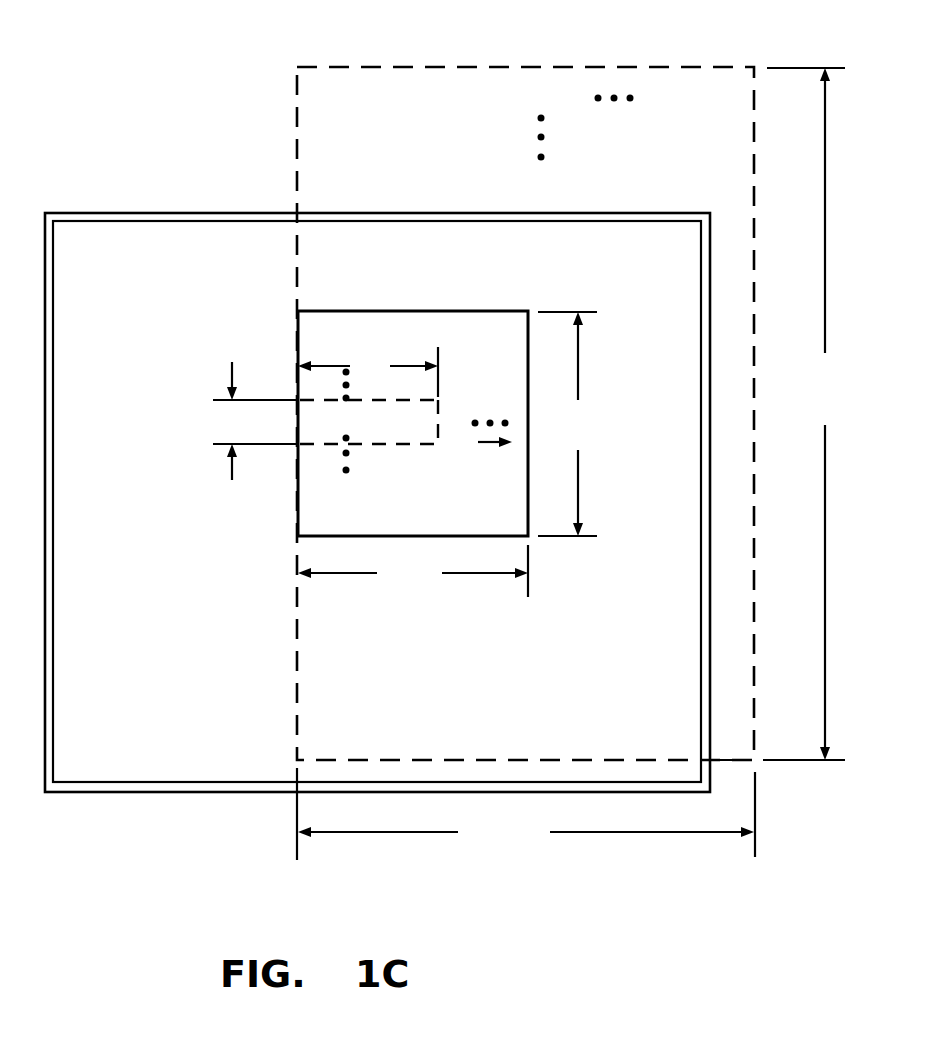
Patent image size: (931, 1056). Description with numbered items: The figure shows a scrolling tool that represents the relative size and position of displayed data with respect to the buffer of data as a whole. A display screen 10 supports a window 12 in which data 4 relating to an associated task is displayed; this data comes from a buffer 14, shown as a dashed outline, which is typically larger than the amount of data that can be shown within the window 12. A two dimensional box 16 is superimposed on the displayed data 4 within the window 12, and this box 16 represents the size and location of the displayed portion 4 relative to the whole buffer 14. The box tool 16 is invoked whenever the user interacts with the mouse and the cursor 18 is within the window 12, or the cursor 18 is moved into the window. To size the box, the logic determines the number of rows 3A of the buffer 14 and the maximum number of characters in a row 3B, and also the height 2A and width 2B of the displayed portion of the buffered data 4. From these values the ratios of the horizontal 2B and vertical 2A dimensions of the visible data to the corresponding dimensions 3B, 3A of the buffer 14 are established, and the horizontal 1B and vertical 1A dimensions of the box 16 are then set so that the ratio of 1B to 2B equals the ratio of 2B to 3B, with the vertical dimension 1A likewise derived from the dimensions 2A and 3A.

The screen 10 is at (403, 214).
The window 12 is at (432, 310).
The buffer 14 is at (432, 67).
The box 16 is at (418, 445).
The cursor 18 is at (488, 447).
The displayed data 4 is at (457, 406).
The vertical dimension of the box 1A is at (255, 421).
The horizontal dimension of the box 1B is at (368, 372).
The height of the displayed portion 2A is at (567, 424).
The width of the displayed portion 2B is at (413, 571).
The number of rows of the buffer 3A is at (780, 414).
The maximum number of characters in a row 3B is at (526, 814).